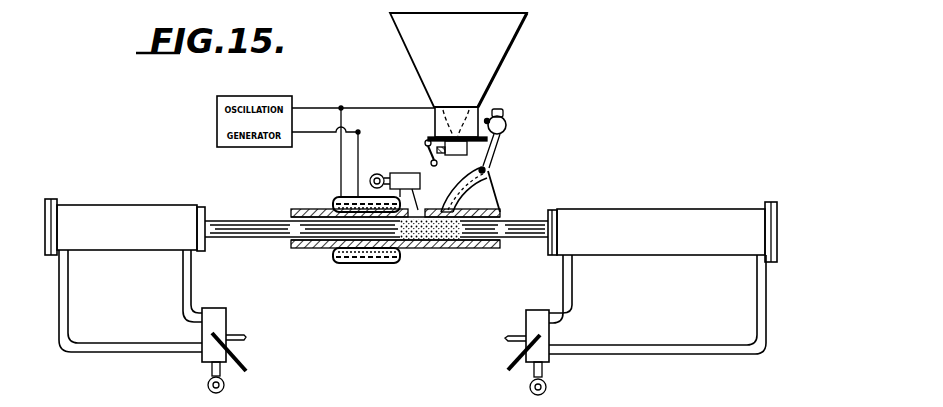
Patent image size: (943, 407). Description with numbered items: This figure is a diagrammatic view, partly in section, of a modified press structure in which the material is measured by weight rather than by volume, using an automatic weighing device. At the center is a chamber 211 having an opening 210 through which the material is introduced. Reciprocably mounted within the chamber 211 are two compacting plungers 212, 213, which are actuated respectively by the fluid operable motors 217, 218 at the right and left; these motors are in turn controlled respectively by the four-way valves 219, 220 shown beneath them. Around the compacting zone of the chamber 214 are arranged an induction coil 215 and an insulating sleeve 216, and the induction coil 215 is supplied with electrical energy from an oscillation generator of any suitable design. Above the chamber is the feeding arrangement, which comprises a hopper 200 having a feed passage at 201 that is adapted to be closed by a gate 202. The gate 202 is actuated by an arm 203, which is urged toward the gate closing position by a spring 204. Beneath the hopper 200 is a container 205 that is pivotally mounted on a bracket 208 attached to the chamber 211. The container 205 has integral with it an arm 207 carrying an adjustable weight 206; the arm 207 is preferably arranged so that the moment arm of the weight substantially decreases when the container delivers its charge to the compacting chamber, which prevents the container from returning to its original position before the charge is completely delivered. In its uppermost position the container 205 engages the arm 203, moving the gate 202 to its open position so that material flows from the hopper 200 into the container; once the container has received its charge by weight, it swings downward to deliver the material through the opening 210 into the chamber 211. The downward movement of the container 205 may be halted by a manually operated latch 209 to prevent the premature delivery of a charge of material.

The hopper 200 is at (514, 38).
The feed passage 201 is at (470, 99).
The gate 202 is at (436, 138).
The arm 203 is at (430, 161).
The spring 204 is at (425, 144).
The container 205 is at (489, 176).
The adjustable weight 206 is at (506, 126).
The arm 207 is at (499, 150).
The bracket 208 is at (486, 212).
The manually operated latch 209 is at (410, 180).
The opening 210 is at (418, 246).
The chamber 211 is at (487, 247).
The compacting plunger 212 is at (532, 222).
The compacting plunger 213 is at (276, 210).
The compacting zone of the chamber 214 is at (338, 198).
The induction coil 215 is at (338, 264).
The insulating sleeve 216 is at (380, 264).
The fluid operable motor 217 is at (656, 200).
The fluid operable motor 218 is at (138, 216).
The four-way valve 219 is at (526, 322).
The four-way valve 220 is at (226, 321).